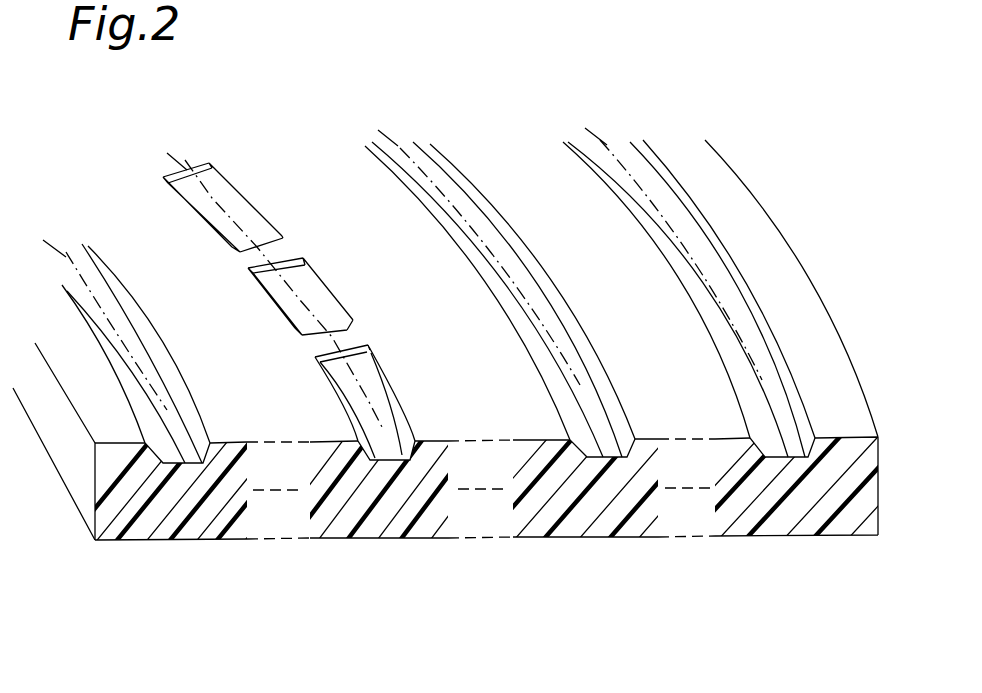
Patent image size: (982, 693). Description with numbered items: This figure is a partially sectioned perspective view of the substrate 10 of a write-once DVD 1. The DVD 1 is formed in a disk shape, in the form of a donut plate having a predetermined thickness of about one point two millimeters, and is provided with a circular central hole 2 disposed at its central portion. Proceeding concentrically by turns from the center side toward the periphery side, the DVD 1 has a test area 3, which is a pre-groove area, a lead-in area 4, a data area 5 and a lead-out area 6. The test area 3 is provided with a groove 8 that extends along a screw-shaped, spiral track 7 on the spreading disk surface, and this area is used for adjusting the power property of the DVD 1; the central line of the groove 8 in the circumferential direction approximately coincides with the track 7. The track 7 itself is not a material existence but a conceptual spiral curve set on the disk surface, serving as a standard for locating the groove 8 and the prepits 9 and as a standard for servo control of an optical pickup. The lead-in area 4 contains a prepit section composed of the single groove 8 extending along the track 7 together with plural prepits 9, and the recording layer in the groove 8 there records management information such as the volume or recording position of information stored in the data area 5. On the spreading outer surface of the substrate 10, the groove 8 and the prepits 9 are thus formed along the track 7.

The DVD 1 is at (757, 170).
The central hole 2 is at (68, 447).
The test area 3 is at (192, 528).
The lead-in area 4 is at (373, 522).
The data area 5 is at (575, 518).
The lead-out area 6 is at (810, 515).
The track 7 is at (66, 245).
The groove 8 is at (170, 400).
The prepits 9 is at (238, 215).
The substrate 10 is at (795, 248).